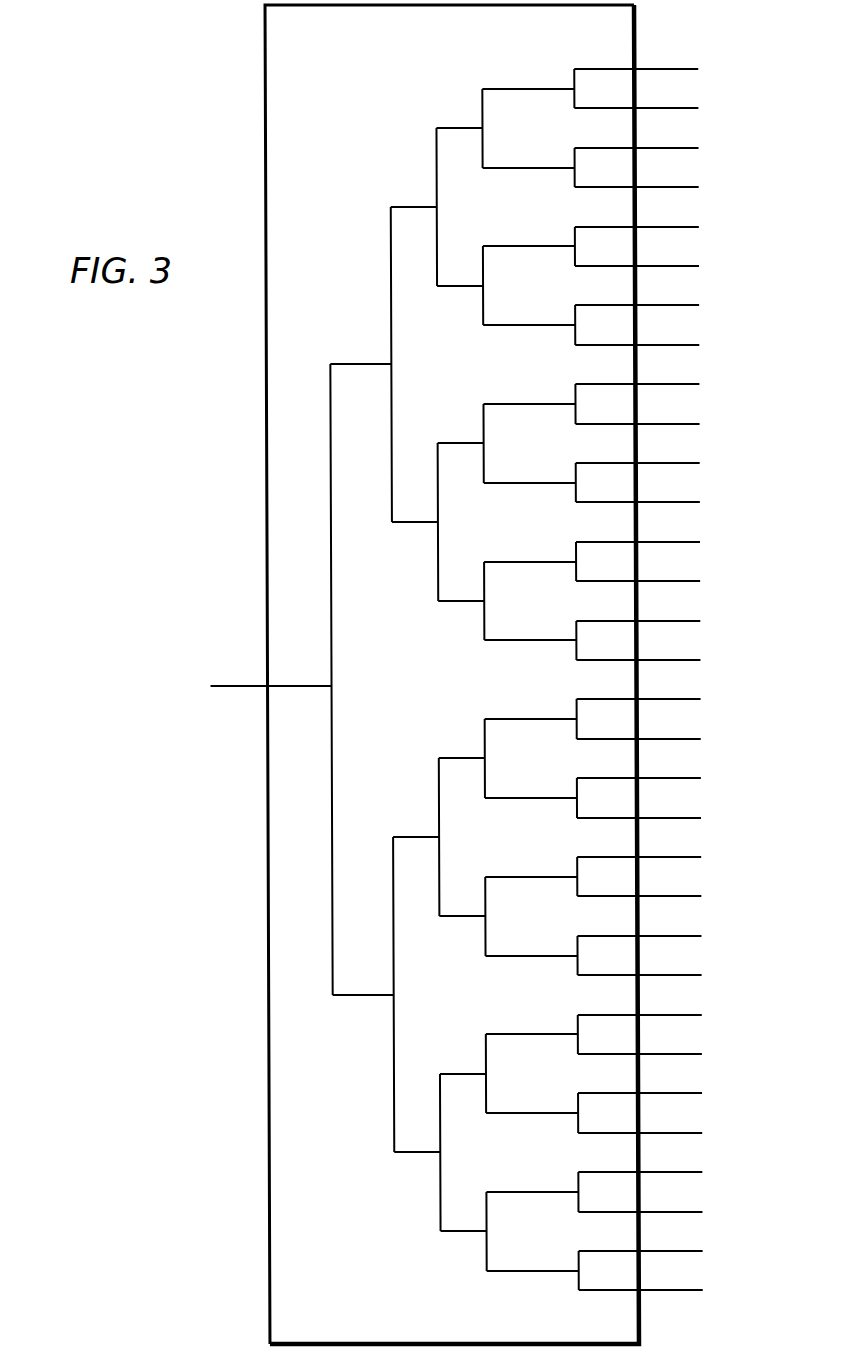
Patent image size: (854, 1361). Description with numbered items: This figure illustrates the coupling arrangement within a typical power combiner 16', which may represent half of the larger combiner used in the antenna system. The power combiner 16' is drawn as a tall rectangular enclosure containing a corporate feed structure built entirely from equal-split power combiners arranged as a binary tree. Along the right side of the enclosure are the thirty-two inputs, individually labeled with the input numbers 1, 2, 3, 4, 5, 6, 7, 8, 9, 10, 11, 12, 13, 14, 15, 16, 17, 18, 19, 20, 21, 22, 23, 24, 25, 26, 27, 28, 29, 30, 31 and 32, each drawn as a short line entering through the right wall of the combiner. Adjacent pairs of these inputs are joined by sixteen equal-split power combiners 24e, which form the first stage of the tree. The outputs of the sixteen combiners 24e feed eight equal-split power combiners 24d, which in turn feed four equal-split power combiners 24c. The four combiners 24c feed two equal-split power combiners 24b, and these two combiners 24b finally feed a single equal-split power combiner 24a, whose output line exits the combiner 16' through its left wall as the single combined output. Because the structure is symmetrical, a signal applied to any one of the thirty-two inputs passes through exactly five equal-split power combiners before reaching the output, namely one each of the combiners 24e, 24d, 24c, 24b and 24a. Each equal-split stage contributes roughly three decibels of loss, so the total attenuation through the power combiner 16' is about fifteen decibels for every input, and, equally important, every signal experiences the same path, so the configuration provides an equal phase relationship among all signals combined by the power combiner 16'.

The power combiner 16' is at (419, 674).
The equal-split power combiner 24a is at (328, 685).
The equal-split power combiners 24b is at (389, 362).
The equal-split power combiners 24c is at (435, 206).
The equal-split power combiners 24d is at (481, 127).
The equal-split power combiners 24e is at (573, 88).
The output port 1 is at (649, 68).
The output port 2 is at (649, 107).
The output port 3 is at (650, 147).
The output port 4 is at (650, 186).
The output port 5 is at (650, 226).
The output port 6 is at (650, 265).
The output port 7 is at (650, 304).
The output port 8 is at (650, 344).
The output port 9 is at (650, 383).
The output port 10 is at (654, 423).
The output port 11 is at (654, 462).
The output port 12 is at (654, 501).
The output port 13 is at (654, 541).
The output port 14 is at (654, 580).
The output port 15 is at (654, 620).
The output port 16 is at (654, 659).
The output port 17 is at (655, 698).
The output port 18 is at (655, 738).
The output port 19 is at (655, 777).
The output port 20 is at (655, 817).
The output port 21 is at (655, 856).
The output port 22 is at (655, 895).
The output port 23 is at (655, 935).
The output port 24 is at (656, 974).
The output port 25 is at (656, 1014).
The output port 26 is at (656, 1053).
The output port 27 is at (656, 1092).
The output port 28 is at (656, 1132).
The output port 29 is at (656, 1171).
The output port 30 is at (656, 1211).
The output port 31 is at (657, 1250).
The output port 32 is at (657, 1289).